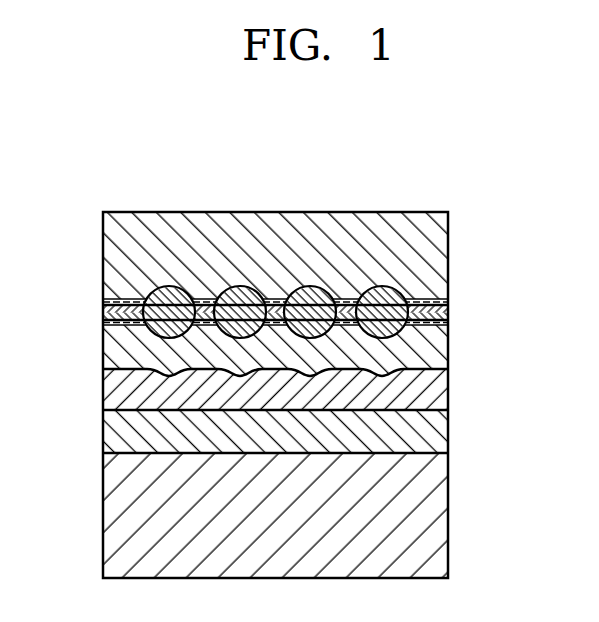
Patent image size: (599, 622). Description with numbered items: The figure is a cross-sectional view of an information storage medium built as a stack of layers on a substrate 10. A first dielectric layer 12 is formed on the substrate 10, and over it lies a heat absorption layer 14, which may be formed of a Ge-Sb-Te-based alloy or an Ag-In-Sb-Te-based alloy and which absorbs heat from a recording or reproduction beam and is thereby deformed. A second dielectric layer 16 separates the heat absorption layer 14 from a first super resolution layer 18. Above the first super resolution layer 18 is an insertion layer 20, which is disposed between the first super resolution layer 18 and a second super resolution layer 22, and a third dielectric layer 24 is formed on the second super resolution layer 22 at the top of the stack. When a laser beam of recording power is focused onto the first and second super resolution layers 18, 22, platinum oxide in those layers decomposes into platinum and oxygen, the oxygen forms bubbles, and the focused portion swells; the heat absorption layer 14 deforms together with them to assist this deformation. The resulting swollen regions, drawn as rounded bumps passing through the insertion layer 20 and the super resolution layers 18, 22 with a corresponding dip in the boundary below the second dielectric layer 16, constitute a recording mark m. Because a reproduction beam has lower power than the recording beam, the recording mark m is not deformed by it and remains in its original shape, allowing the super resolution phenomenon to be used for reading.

The substrate 10 is at (432, 515).
The first dielectric layer 12 is at (423, 433).
The heat absorption layer 14 is at (423, 395).
The second dielectric layer 16 is at (425, 357).
The first super resolution layer 18 is at (450, 327).
The insertion layer 20 is at (450, 312).
The second super resolution layer 22 is at (450, 300).
The third dielectric layer 24 is at (427, 242).
The recording mark m is at (172, 286).